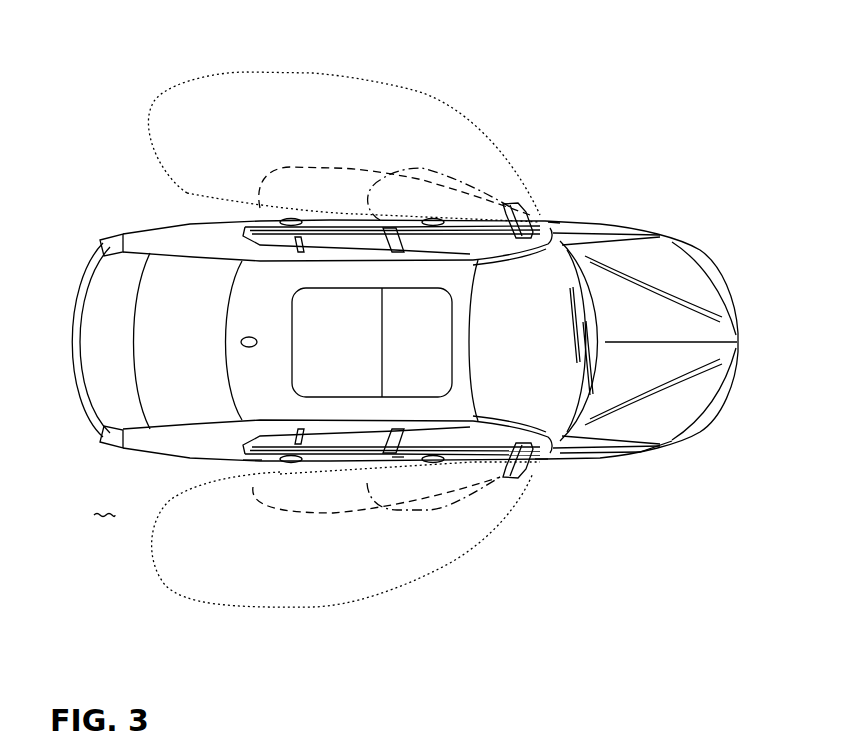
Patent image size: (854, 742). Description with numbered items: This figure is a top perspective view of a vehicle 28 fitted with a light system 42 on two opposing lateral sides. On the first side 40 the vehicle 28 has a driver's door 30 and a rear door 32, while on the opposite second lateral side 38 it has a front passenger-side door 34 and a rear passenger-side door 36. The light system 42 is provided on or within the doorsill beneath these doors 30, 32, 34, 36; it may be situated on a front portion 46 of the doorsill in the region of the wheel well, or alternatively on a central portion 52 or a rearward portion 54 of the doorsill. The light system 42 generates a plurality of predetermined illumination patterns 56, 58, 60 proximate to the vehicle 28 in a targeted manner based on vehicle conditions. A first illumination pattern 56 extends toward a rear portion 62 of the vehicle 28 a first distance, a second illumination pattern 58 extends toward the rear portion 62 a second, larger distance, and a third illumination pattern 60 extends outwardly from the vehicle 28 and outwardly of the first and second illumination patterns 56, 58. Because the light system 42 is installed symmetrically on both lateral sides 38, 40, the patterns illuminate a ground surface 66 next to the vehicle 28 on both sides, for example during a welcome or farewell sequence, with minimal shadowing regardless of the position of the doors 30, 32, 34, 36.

The vehicle 28 is at (628, 264).
The driver's door 30 is at (457, 221).
The rear door 32 is at (312, 222).
The front passenger-side door 34 is at (460, 458).
The rear passenger-side door 36 is at (267, 455).
The second lateral side 38 is at (617, 463).
The first side 40 is at (557, 221).
The light system 42 is at (546, 221).
The front portion 46 is at (541, 466).
The central portion 52 is at (397, 465).
The rearward portion 54 is at (252, 463).
The first illumination pattern 56 is at (422, 168).
The second illumination pattern 58 is at (333, 168).
The third illumination pattern 60 is at (313, 73).
The rear portion 62 is at (72, 362).
The ground surface 66 is at (104, 507).